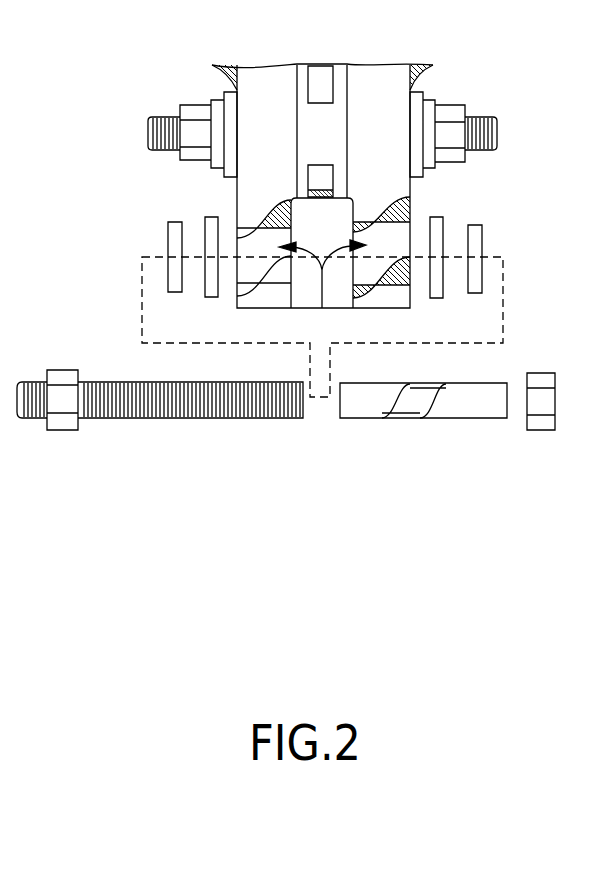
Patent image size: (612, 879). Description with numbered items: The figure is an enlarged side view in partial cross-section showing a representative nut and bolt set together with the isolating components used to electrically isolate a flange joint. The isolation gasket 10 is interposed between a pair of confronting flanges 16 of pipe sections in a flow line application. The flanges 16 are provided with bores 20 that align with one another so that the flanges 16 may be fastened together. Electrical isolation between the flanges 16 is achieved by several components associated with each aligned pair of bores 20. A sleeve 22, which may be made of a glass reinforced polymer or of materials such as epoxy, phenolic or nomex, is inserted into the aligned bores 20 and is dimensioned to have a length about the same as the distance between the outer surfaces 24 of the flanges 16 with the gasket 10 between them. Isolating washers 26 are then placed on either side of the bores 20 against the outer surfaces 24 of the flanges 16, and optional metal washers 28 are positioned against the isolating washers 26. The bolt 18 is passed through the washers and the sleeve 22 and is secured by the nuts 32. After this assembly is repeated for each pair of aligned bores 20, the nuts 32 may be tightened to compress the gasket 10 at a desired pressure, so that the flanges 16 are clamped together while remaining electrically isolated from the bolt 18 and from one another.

The isolation gasket 10 is at (322, 197).
The flange 16 is at (383, 85).
The bolt 18 is at (218, 418).
The bore 20 is at (322, 288).
The sleeve 22 is at (465, 418).
The outer surface 24 is at (237, 212).
The isolating washer 26 is at (212, 298).
The metal washer 28 is at (168, 222).
The nut 32 is at (63, 370).